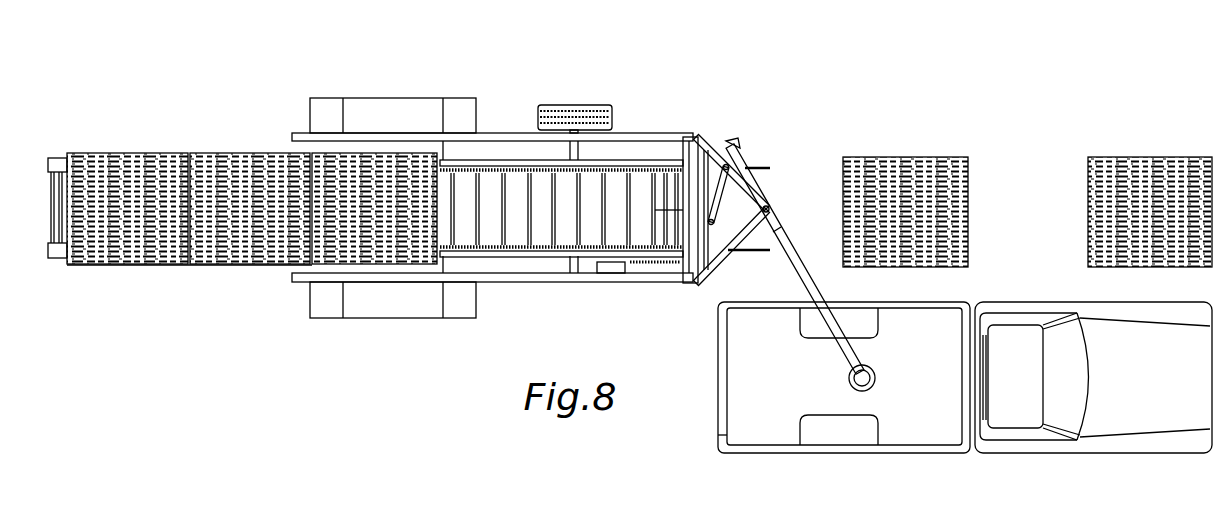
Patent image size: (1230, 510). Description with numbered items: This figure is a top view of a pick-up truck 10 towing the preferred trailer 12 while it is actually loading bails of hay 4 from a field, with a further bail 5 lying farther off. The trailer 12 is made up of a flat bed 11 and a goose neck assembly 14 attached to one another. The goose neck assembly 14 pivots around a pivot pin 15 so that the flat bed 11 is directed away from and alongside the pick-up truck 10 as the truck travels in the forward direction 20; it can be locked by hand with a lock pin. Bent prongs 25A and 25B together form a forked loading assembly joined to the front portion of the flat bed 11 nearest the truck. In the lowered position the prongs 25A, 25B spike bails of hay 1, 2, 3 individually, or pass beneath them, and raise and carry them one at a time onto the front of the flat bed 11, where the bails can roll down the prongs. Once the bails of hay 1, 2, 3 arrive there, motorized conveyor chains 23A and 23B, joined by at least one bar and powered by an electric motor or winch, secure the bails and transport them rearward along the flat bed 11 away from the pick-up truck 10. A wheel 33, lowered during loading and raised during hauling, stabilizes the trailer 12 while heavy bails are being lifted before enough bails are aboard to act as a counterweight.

The bail of hay 1 is at (148, 151).
The bail of hay 2 is at (268, 151).
The bail of hay 3 is at (390, 151).
The bails of hay 4 is at (913, 155).
The fifth bale 5 is at (1162, 155).
The pick-up truck 10 is at (1044, 300).
The flat bed 11 is at (160, 266).
The trailer 12 is at (371, 343).
The goose neck assembly 14 is at (793, 200).
The pivot pin 15 is at (777, 190).
The forward direction 20 is at (627, 338).
The motorized conveyor chain 23A is at (522, 160).
The motorized conveyor chain 23B is at (522, 258).
The prong 25A is at (757, 167).
The prong 25B is at (738, 252).
The wheel 33 is at (575, 104).